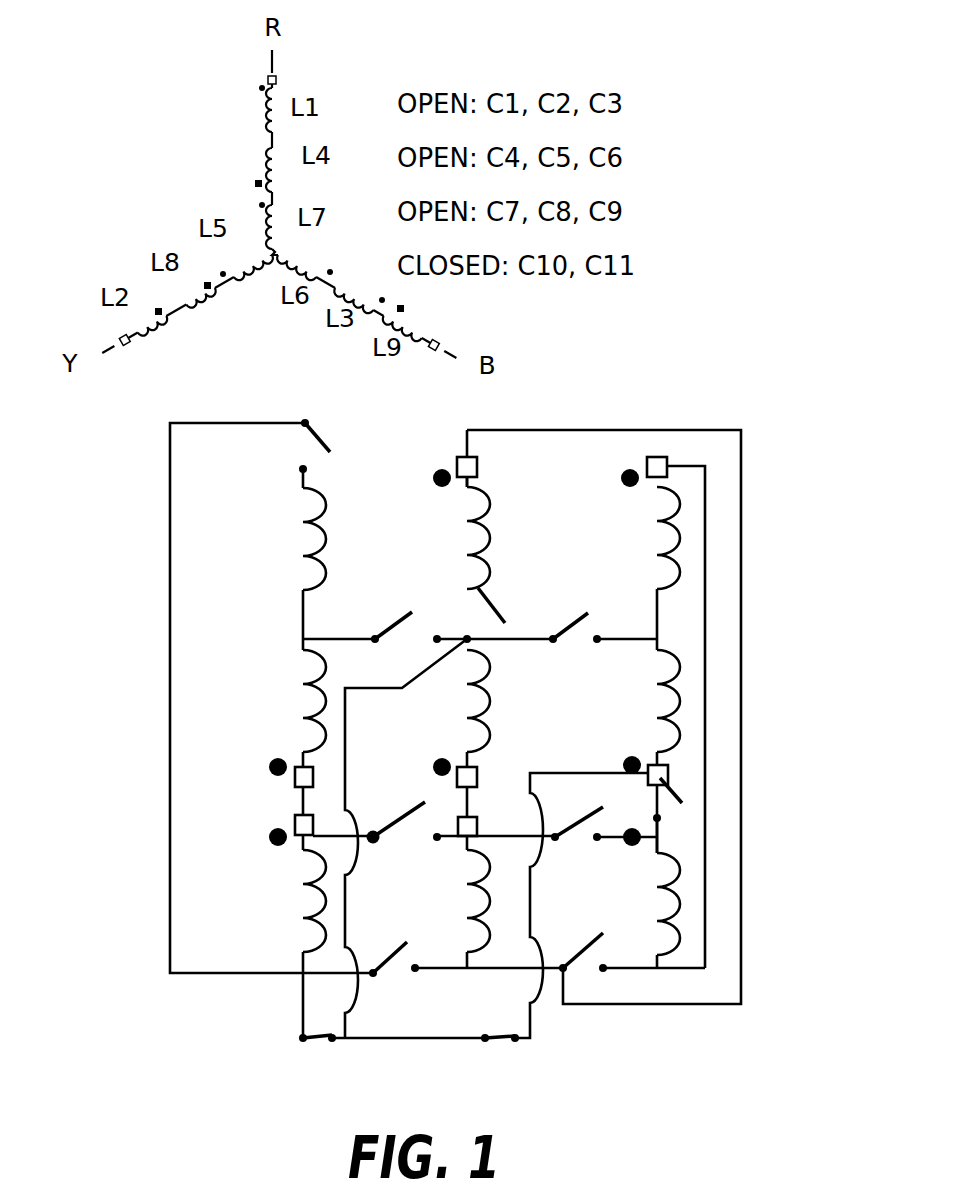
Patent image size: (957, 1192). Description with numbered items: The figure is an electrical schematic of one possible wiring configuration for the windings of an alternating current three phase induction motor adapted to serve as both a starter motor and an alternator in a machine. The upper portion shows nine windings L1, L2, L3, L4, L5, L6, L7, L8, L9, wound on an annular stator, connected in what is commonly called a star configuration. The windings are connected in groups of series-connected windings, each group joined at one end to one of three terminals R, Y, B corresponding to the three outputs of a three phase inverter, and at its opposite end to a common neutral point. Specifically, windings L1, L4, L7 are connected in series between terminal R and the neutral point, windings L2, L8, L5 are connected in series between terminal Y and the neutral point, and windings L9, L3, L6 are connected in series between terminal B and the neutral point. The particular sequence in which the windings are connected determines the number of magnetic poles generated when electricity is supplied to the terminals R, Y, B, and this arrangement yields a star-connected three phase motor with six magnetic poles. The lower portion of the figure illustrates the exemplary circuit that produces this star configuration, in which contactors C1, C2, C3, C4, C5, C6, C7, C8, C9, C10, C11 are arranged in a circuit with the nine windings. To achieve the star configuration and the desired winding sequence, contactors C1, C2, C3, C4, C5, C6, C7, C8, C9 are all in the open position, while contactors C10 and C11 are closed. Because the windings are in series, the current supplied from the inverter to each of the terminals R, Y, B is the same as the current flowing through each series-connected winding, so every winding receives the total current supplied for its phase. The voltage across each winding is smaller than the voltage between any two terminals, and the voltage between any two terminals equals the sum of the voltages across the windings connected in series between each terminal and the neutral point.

The terminal R is at (286, 472).
The terminal Y is at (499, 521).
The terminal B is at (673, 833).
The winding L1 is at (291, 539).
The winding L2 is at (456, 538).
The winding L3 is at (646, 538).
The winding L4 is at (293, 701).
The winding L5 is at (457, 701).
The winding L6 is at (648, 701).
The winding L7 is at (294, 901).
The winding L8 is at (457, 901).
The winding L9 is at (648, 904).
The contactor C1 is at (336, 440).
The contactor C2 is at (512, 605).
The contactor C3 is at (650, 798).
The contactor C4 is at (398, 639).
The contactor C5 is at (570, 646).
The contactor C6 is at (396, 841).
The contactor C7 is at (577, 840).
The contactor C8 is at (391, 973).
The contactor C9 is at (581, 966).
The contactor C10 is at (288, 1042).
The contactor C11 is at (536, 1042).